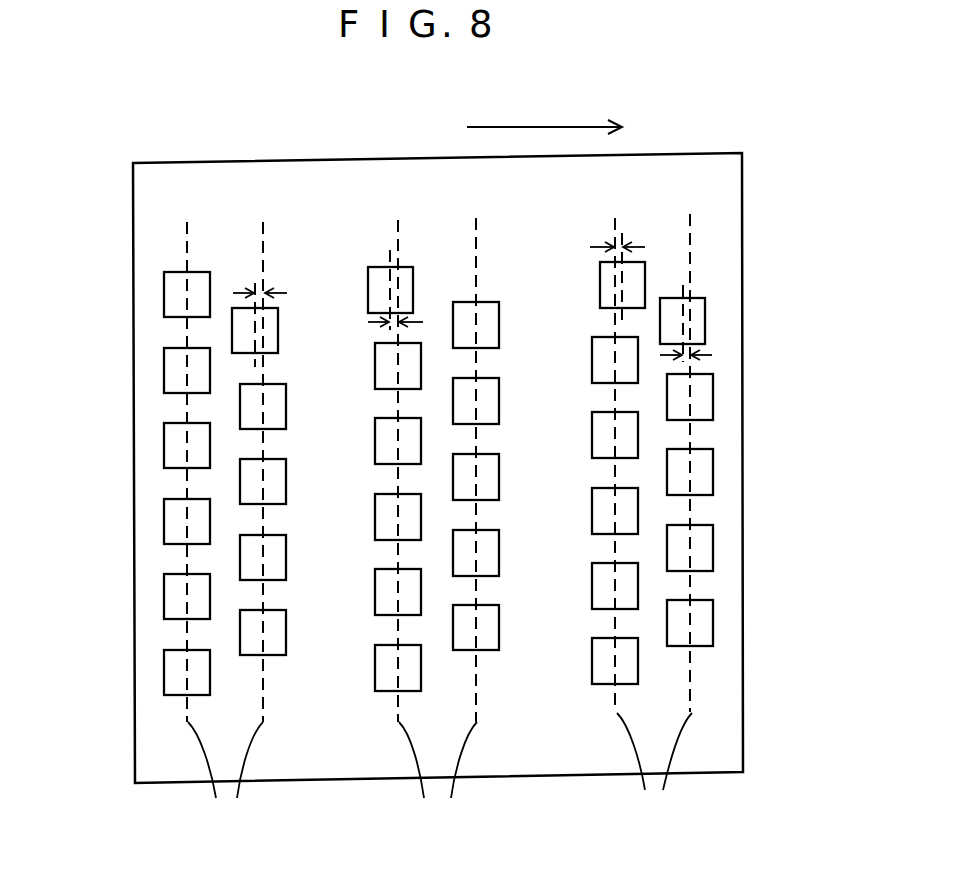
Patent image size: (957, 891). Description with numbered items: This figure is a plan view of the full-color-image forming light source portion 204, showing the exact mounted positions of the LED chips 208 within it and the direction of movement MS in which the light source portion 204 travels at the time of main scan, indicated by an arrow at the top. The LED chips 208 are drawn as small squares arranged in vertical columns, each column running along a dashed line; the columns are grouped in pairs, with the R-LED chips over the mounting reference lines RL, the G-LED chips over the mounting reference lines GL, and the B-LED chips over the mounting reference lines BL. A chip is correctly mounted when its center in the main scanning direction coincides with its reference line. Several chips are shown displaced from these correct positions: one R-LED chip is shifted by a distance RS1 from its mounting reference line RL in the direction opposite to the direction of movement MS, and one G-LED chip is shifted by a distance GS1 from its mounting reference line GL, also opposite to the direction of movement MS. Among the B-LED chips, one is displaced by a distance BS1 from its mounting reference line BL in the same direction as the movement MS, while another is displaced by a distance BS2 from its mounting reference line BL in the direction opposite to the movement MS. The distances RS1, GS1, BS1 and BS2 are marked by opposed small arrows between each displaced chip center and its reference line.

The full-color-image forming light source portion 204 is at (712, 107).
The LED chips 208 is at (758, 282).
The direction of movement MS is at (547, 127).
The displacement distance of R-LED chip RS1 is at (257, 292).
The displacement distance of G-LED chip GS1 is at (393, 327).
The displacement distance of first B-LED chip BS1 is at (621, 243).
The displacement distance of second B-LED chip BS2 is at (693, 356).
The mounting reference line for R-LED chips RL is at (225, 775).
The mounting reference line for G-LED chips GL is at (438, 773).
The mounting reference line for B-LED chips BL is at (654, 765).